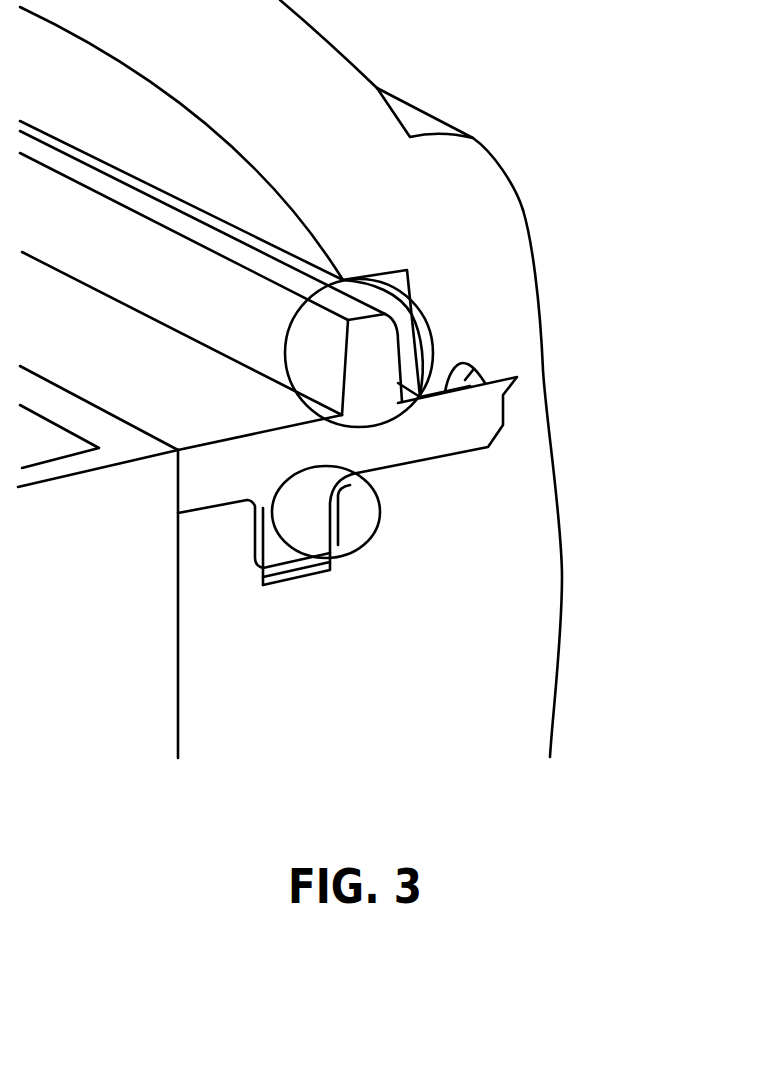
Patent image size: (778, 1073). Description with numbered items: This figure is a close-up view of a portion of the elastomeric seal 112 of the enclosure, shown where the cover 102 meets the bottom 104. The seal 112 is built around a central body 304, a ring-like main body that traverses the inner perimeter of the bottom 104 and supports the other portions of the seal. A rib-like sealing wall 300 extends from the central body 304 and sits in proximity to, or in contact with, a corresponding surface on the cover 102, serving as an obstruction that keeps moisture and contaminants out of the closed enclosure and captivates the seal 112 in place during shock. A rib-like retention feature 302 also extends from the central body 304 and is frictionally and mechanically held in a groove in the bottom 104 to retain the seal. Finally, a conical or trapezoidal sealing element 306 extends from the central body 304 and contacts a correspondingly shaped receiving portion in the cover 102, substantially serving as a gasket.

The cover 102 is at (453, 182).
The bottom 104 is at (507, 702).
The elastomeric seal 112 is at (460, 413).
The sealing wall 300 is at (425, 317).
The retention feature 302 is at (363, 545).
The central body 304 is at (388, 458).
The sealing element 306 is at (475, 363).